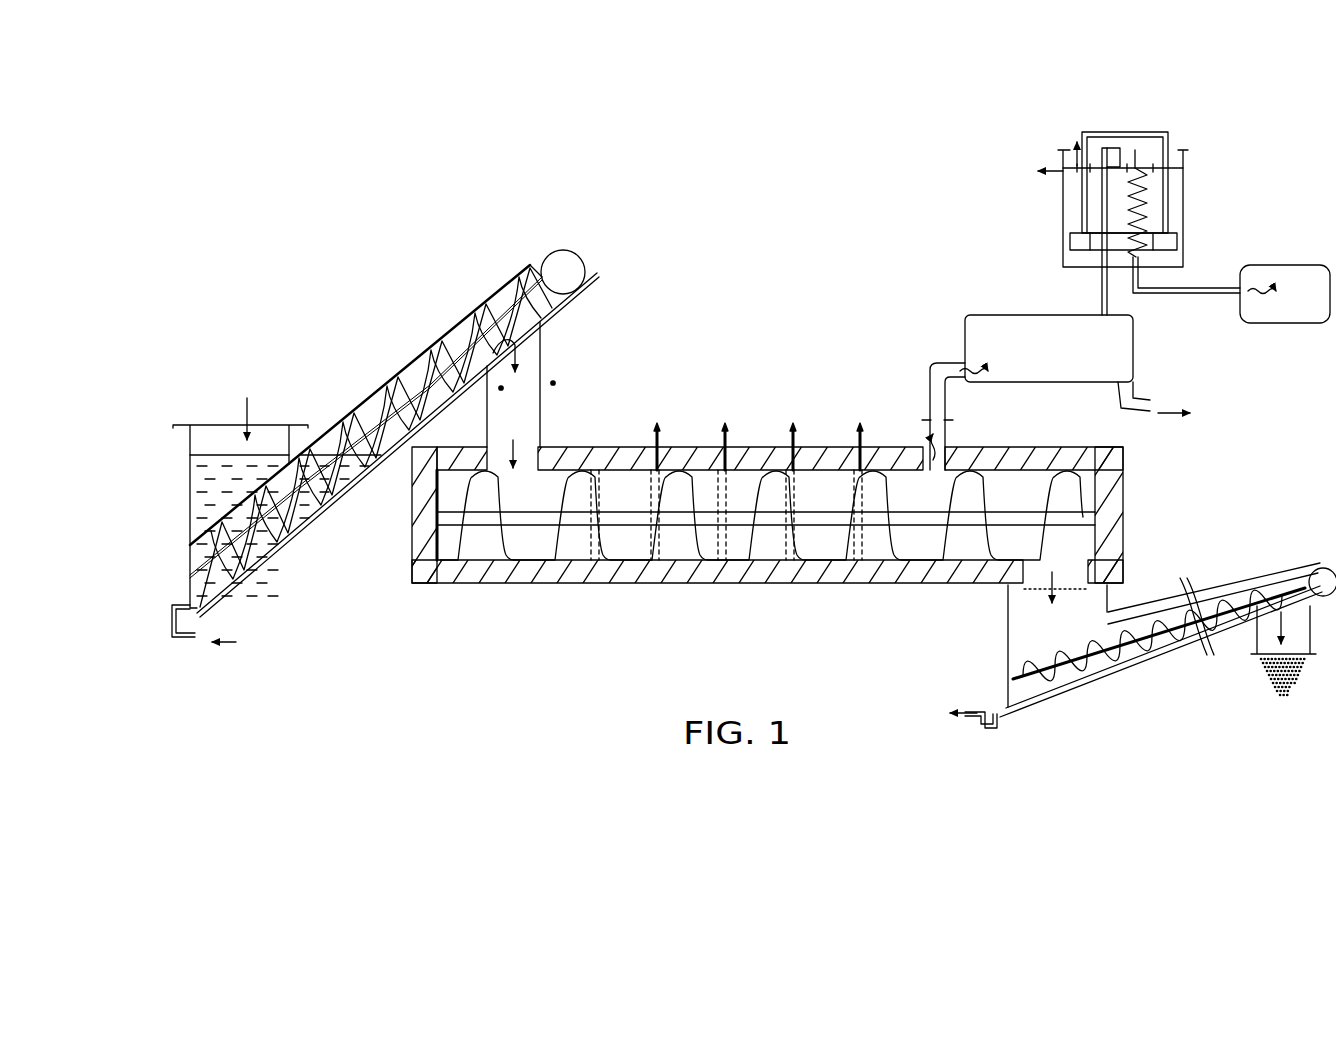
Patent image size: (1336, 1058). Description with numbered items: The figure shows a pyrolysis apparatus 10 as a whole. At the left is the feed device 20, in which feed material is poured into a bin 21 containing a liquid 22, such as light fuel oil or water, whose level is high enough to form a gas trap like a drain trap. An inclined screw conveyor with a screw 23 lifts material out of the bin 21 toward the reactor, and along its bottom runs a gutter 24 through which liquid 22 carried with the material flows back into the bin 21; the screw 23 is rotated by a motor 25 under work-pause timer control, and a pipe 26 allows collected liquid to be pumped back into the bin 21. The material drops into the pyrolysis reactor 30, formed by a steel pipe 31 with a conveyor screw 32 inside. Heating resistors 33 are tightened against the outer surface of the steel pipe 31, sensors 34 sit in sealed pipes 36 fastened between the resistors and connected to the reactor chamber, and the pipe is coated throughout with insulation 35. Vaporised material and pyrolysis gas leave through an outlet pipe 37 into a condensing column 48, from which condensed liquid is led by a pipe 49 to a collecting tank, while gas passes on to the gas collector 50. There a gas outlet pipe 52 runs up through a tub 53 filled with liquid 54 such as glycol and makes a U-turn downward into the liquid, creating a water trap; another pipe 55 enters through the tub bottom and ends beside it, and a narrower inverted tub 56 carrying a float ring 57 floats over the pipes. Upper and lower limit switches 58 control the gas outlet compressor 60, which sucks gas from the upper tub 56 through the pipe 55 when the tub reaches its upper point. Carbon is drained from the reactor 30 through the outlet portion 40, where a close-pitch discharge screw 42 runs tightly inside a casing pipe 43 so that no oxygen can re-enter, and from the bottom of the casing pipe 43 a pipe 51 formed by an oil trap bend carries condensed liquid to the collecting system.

The pyrolysis apparatus 10 is at (812, 224).
The feed device 20 is at (376, 356).
The bin 21 is at (205, 431).
The liquid 22 is at (207, 503).
The screw 23 is at (441, 356).
The gutter 24 is at (340, 497).
The motor 25 is at (563, 250).
The pipe 26 is at (186, 645).
The pyrolysis reactor 30 is at (753, 383).
The steel pipe 31 is at (470, 585).
The conveyor screw 32 is at (548, 550).
The heating resistors 33 is at (605, 447).
The sensors 34 is at (657, 426).
The insulation 35 is at (618, 581).
The sealed pipes 36 is at (660, 438).
The outlet pipe 37 is at (931, 389).
The outlet portion 40 is at (1256, 545).
The discharge screw 42 is at (1167, 657).
The casing pipe 43 is at (1138, 670).
The condensing column 48 is at (977, 328).
The pipe 49 is at (1141, 405).
The gas collector 50 is at (1215, 189).
The pipe 51 is at (995, 730).
The gas outlet pipe 52 is at (1100, 287).
The tub 53 is at (1063, 216).
The liquid 54 is at (1175, 158).
The pipe 55 is at (1200, 296).
The tub 56 is at (1080, 191).
The float ring 57 is at (1185, 238).
The limit switches 58 is at (1173, 153).
The gas outlet compressor 60 is at (1290, 265).